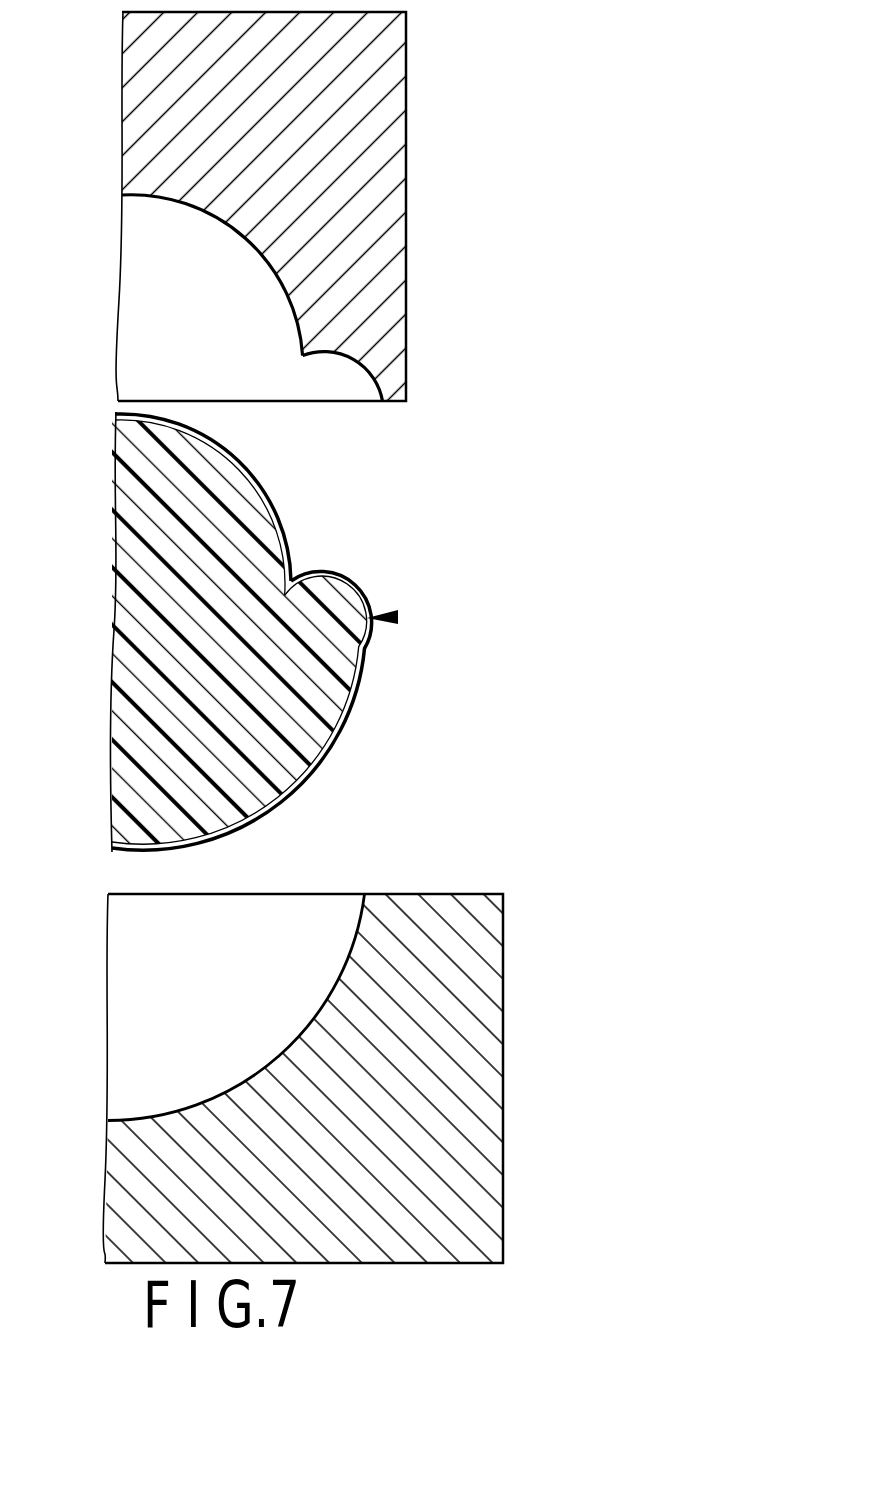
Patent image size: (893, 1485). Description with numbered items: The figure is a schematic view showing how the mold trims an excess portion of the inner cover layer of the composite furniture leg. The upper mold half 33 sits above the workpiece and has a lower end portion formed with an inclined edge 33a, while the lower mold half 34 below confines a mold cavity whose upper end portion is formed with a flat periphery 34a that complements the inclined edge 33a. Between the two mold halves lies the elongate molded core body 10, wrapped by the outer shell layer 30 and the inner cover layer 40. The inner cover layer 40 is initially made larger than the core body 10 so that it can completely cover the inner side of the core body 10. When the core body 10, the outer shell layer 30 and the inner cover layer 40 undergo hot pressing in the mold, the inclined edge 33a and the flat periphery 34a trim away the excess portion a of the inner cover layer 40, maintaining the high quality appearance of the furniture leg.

The molded core body 10 is at (121, 673).
The outer shell layer 30 is at (280, 503).
The inner cover layer 40 is at (330, 757).
The excess portion a is at (395, 615).
The upper mold half 33 is at (385, 210).
The inclined edge 33a is at (398, 392).
The lower mold half 34 is at (477, 1062).
The flat periphery 34a is at (408, 888).